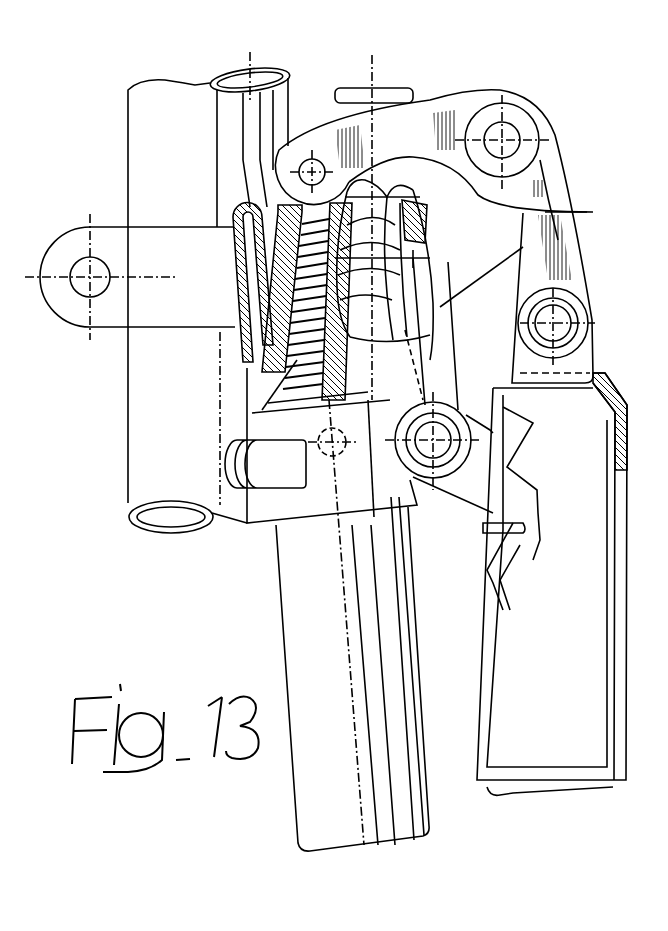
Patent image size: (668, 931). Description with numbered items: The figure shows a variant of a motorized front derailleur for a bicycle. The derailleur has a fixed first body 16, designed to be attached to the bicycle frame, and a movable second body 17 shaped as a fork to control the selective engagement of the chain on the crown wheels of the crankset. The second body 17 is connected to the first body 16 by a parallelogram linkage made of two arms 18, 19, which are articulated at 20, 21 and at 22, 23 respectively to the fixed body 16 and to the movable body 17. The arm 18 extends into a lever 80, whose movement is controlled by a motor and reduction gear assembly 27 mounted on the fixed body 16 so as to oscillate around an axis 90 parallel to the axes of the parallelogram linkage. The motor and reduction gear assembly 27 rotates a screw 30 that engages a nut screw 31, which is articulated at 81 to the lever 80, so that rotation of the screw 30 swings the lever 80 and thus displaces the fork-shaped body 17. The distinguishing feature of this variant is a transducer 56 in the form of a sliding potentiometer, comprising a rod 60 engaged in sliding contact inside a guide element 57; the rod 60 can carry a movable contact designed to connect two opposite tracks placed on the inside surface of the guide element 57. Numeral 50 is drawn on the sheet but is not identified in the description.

The first body 16 is at (567, 212).
The second body 17 is at (630, 437).
The arm 18 is at (550, 190).
The arm 19 is at (438, 250).
The articulation 20 is at (503, 140).
The articulation 21 is at (667, 262).
The articulation 22 is at (427, 219).
The articulation 23 is at (430, 486).
The motor and reduction gear assembly 27 is at (277, 650).
The screw 30 is at (433, 336).
The nut screw 31 is at (270, 205).
The lever 50 is at (527, 90).
The transducer 56 is at (217, 220).
The guide element 57 is at (224, 204).
The rod 60 is at (258, 383).
The lever 80 is at (420, 120).
The articulation 81 is at (313, 158).
The axis 90 is at (335, 622).